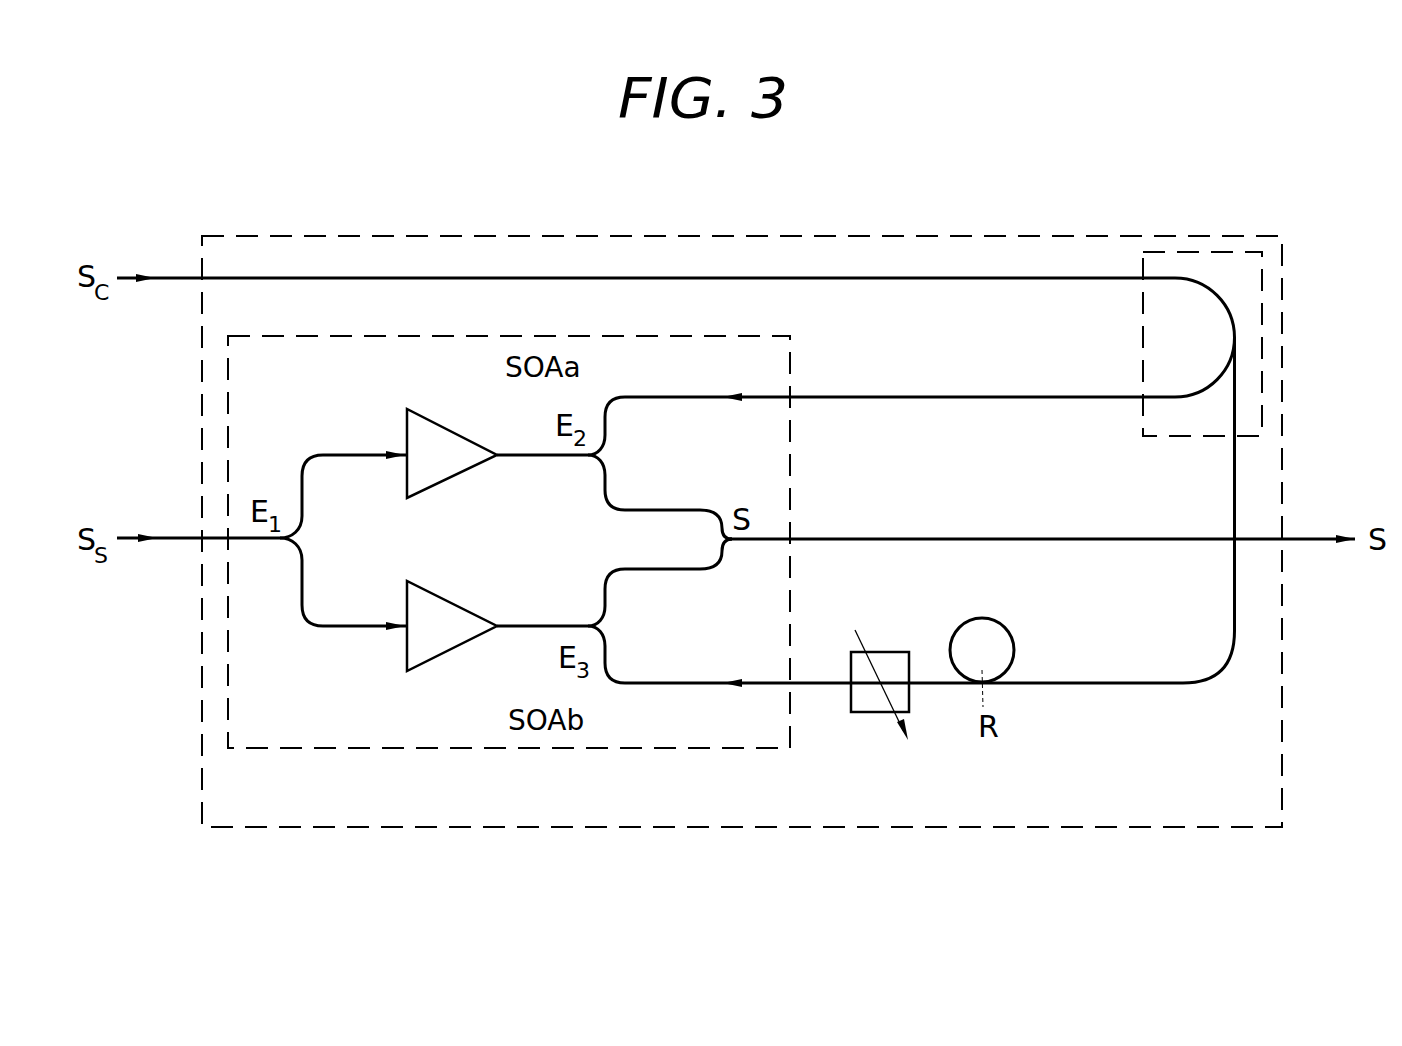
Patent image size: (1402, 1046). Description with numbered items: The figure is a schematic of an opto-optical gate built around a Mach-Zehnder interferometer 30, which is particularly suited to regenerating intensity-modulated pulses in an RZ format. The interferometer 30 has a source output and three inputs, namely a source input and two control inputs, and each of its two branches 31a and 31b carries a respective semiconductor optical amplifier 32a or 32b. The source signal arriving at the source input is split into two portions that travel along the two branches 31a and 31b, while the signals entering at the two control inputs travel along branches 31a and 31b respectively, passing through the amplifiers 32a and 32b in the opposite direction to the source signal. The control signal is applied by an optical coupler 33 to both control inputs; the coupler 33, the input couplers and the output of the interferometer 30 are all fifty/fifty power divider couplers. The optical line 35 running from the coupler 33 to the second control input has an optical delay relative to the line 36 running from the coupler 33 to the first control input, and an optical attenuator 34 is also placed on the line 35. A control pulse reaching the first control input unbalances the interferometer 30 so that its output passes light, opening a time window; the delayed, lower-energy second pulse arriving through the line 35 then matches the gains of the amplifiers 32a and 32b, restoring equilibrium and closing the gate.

The Mach-Zehnder interferometer 30 is at (247, 637).
The branch 31a is at (350, 452).
The branch 31b is at (350, 634).
The semiconductor optical amplifier 32a is at (445, 442).
The semiconductor optical amplifier 32b is at (443, 638).
The optical coupler 33 is at (1262, 291).
The optical attenuator 34 is at (870, 697).
The optical line 35 is at (1140, 688).
The optical line 36 is at (1047, 400).